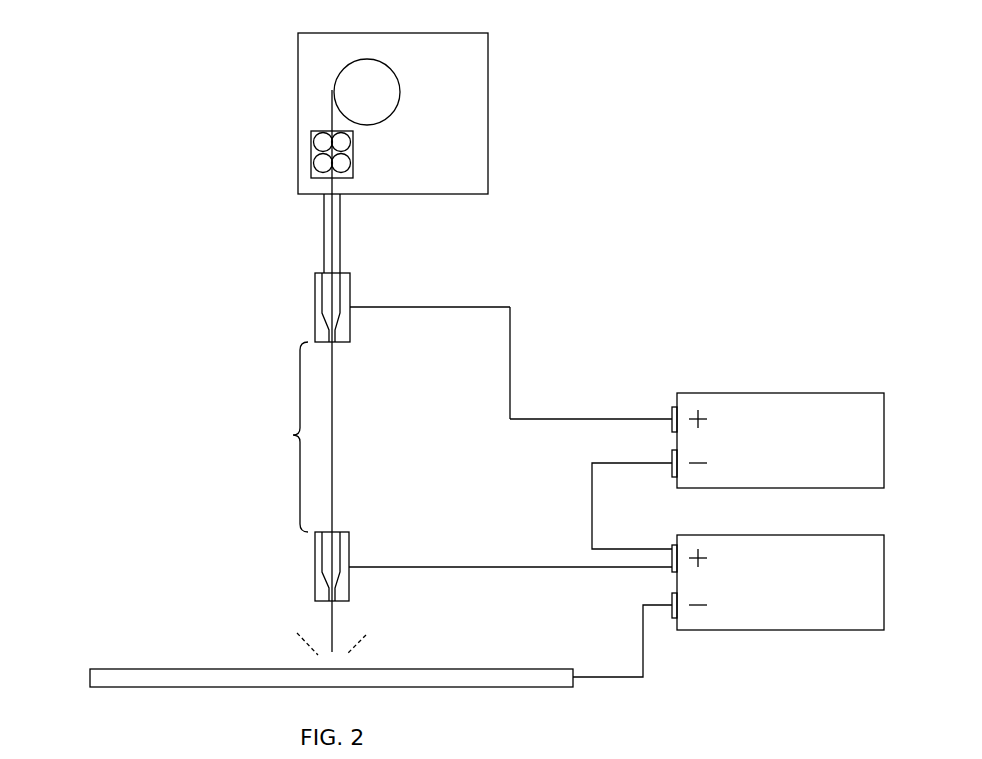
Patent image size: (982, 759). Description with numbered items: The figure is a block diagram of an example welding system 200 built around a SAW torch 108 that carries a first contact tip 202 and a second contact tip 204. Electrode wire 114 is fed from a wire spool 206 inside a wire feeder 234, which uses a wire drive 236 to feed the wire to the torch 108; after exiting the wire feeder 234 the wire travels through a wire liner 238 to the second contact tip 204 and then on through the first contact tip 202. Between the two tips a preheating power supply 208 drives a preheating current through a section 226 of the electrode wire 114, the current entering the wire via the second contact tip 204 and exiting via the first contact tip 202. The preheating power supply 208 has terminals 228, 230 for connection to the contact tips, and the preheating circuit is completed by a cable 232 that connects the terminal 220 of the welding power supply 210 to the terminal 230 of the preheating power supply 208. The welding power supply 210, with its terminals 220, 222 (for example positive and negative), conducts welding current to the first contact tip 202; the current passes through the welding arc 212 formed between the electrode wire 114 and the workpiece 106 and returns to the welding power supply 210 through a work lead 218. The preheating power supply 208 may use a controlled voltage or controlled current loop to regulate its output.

The welding system 200 is at (97, 116).
The SAW torch 108 is at (246, 232).
The wire feeder 234 is at (298, 82).
The wire spool 206 is at (395, 71).
The wire drive 236 is at (354, 148).
The wire liner 238 is at (322, 218).
The second contact tip 204 is at (315, 274).
The section of the electrode wire 226 is at (283, 448).
The first contact tip 202 is at (314, 542).
The electrode wire 114 is at (330, 628).
The welding arc 212 is at (304, 647).
The workpiece 106 is at (90, 688).
The preheating power supply 208 is at (649, 397).
The terminal of the preheating power supply 228 is at (673, 406).
The terminal of the preheating power supply 230 is at (673, 478).
The cable 232 is at (628, 461).
The welding power supply 210 is at (648, 569).
The terminal of the welding power supply 220 is at (673, 546).
The terminal of the welding power supply 222 is at (674, 618).
The work lead 218 is at (639, 657).